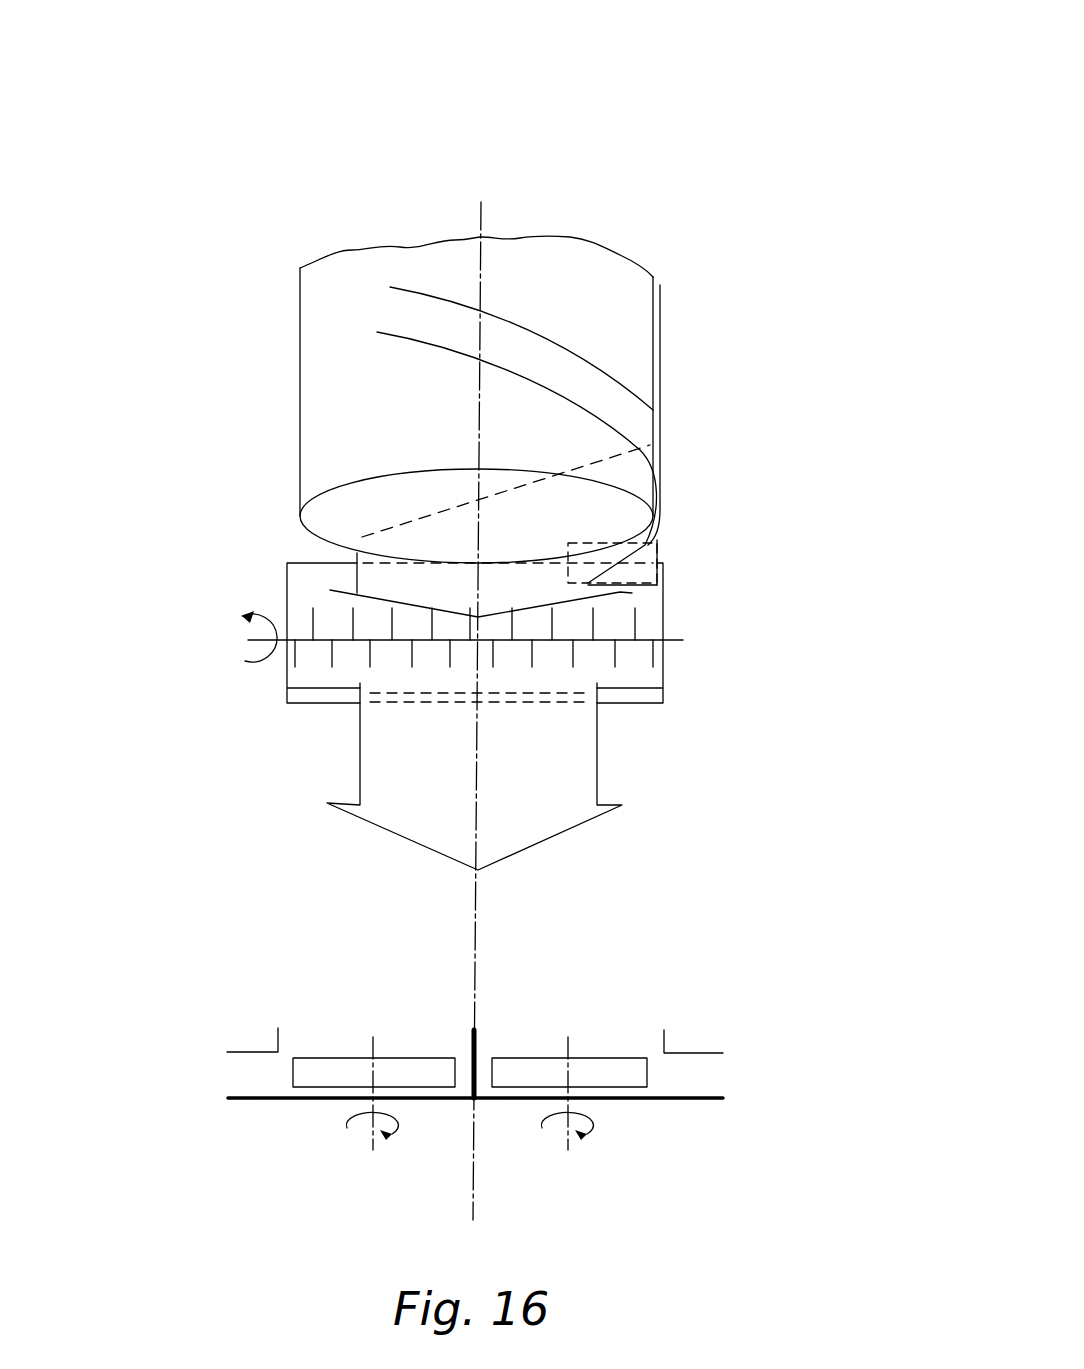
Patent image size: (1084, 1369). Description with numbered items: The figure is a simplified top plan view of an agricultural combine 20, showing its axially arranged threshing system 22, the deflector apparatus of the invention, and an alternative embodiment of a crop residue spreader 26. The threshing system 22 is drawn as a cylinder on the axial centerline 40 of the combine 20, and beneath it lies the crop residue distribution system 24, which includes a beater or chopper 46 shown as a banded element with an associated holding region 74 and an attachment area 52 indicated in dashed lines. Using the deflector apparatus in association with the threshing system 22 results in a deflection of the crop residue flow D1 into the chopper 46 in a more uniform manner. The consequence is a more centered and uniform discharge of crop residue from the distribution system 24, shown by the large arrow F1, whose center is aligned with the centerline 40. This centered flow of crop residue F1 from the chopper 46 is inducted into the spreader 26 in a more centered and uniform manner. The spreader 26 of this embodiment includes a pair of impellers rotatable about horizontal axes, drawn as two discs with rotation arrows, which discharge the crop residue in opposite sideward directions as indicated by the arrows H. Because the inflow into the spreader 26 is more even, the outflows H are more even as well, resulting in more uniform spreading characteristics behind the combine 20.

The agricultural combine 20 is at (737, 120).
The threshing system 22 is at (668, 270).
The crop residue distribution system 24 is at (663, 565).
The crop residue spreader 26 is at (702, 1018).
The centerline 40 is at (483, 213).
The chopper 46 is at (660, 663).
The pad attachment region 52 is at (652, 539).
The drum collar 74 is at (283, 577).
The crop residue flow D1 is at (632, 593).
The centered flow of crop residue F1 is at (597, 763).
The outflows H is at (283, 1077).